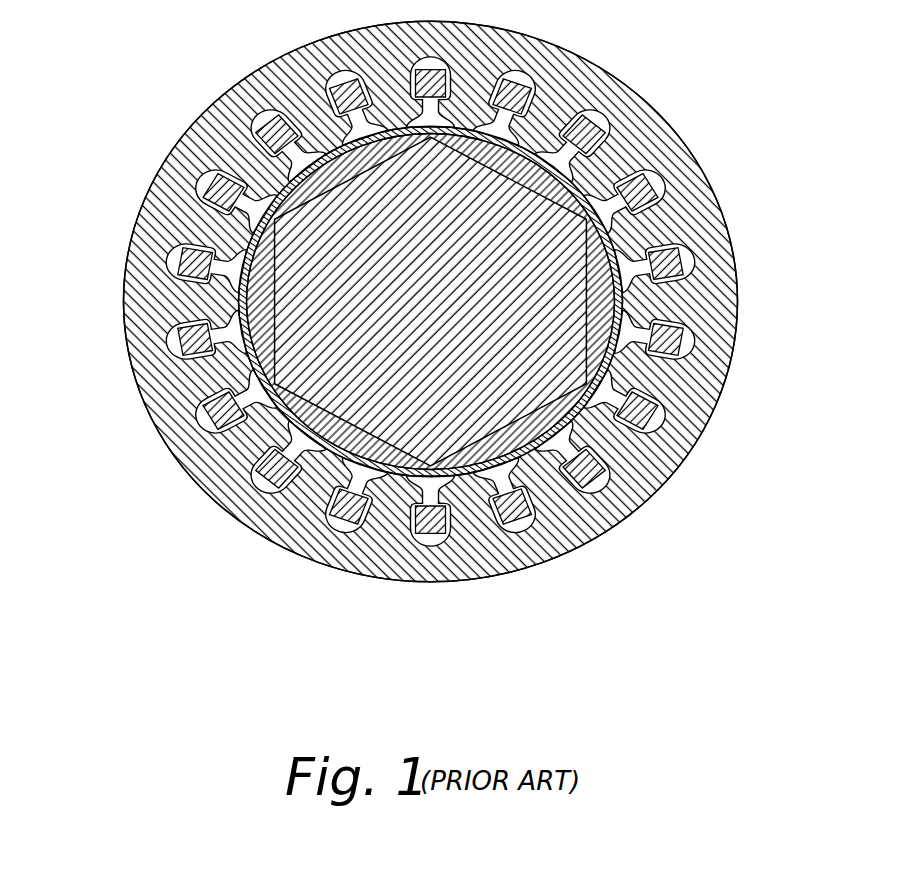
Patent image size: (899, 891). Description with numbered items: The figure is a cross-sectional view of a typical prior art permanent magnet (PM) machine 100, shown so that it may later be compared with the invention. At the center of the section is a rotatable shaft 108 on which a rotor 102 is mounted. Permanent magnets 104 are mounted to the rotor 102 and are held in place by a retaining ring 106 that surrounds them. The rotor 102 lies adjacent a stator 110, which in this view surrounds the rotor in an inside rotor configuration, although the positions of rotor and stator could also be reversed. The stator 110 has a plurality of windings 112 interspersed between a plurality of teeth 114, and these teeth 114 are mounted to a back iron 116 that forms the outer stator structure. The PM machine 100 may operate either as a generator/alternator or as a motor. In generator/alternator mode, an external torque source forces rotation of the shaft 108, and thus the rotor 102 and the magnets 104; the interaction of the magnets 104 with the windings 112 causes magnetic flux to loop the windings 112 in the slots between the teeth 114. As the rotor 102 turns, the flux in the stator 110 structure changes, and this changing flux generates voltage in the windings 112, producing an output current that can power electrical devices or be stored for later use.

The permanent magnet machine 100 is at (207, 541).
The rotor 102 is at (590, 217).
The permanent magnets 104 is at (560, 425).
The retaining ring 106 is at (625, 333).
The rotatable shaft 108 is at (388, 345).
The stator 110 is at (150, 296).
The windings 112 is at (222, 410).
The teeth 114 is at (648, 300).
The back iron 116 is at (713, 392).